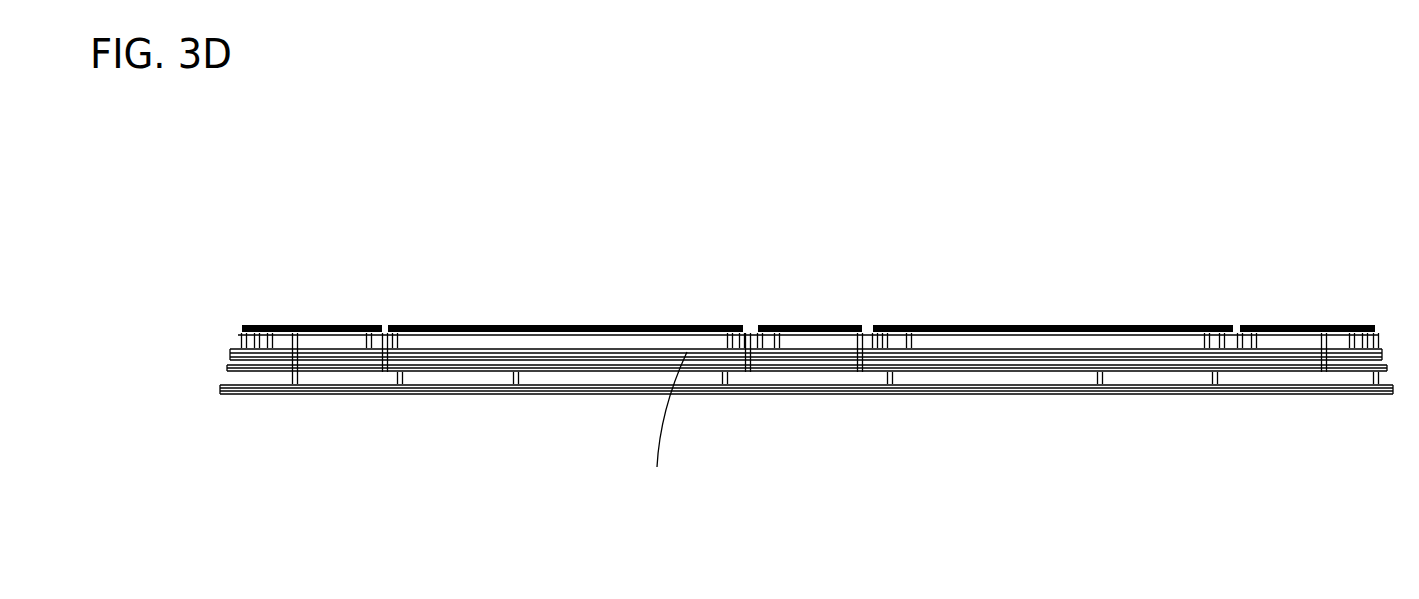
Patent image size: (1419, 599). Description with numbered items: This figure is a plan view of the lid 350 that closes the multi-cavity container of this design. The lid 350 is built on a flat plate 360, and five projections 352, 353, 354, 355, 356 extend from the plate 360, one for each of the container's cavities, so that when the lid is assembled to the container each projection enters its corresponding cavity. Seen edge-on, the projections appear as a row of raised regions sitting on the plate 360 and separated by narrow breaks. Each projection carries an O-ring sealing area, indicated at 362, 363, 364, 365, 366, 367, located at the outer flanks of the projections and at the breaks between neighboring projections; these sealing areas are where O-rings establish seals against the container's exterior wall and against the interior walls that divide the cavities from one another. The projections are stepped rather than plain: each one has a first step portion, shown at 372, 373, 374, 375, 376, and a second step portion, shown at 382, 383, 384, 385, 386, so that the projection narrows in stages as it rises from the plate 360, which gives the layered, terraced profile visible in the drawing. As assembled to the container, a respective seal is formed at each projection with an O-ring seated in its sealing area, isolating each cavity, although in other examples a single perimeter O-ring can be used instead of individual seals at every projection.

The lid 350 is at (170, 435).
The projection 352 is at (320, 328).
The projection 353 is at (583, 323).
The projection 354 is at (783, 328).
The projection 355 is at (1028, 325).
The projection 356 is at (1315, 325).
The plate 360 is at (278, 368).
The O-ring sealing area 362 is at (230, 328).
The O-ring sealing area 363 is at (386, 328).
The O-ring sealing area 364 is at (752, 328).
The O-ring sealing area 365 is at (872, 323).
The O-ring sealing area 366 is at (1235, 323).
The O-ring sealing area 367 is at (1382, 325).
The first step portion 372 is at (340, 338).
The first step portion 373 is at (497, 360).
The first step portion 374 is at (818, 360).
The first step portion 375 is at (1050, 358).
The first step portion 376 is at (1325, 358).
The second step portion 382 is at (365, 352).
The second step portion 383 is at (598, 337).
The second step portion 384 is at (805, 342).
The second step portion 385 is at (978, 340).
The second step portion 386 is at (1270, 340).